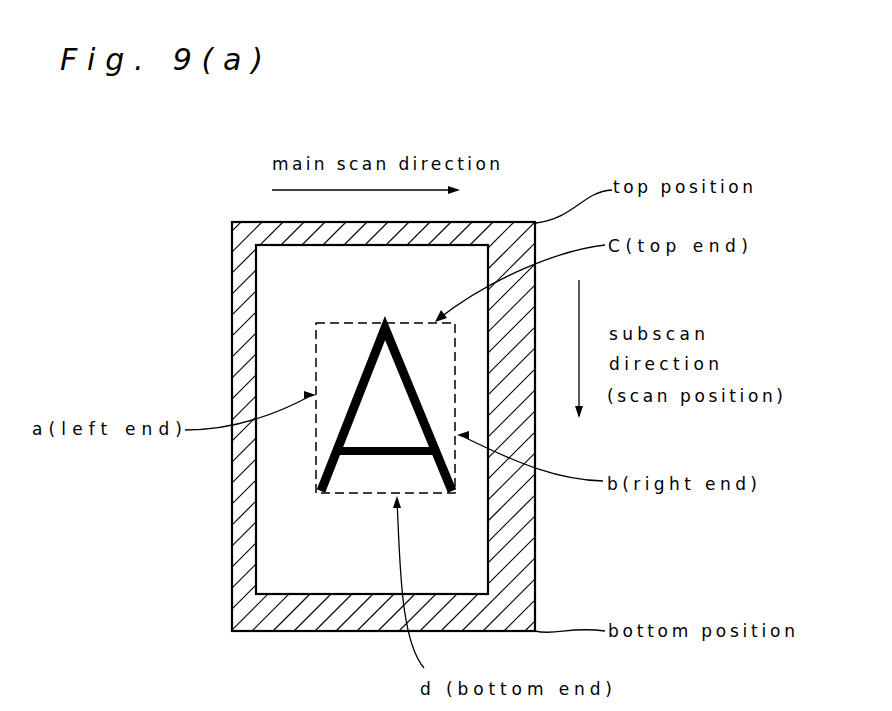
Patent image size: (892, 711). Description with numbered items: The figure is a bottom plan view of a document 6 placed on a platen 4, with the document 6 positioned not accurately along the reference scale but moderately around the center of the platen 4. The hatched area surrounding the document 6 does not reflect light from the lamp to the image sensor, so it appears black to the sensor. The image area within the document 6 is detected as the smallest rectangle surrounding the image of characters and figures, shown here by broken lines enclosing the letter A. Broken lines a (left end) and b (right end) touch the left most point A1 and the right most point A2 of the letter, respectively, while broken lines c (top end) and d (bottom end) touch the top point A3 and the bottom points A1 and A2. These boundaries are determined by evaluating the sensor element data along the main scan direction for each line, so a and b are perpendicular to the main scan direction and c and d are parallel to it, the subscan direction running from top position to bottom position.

The platen 4 is at (513, 232).
The document 6 is at (300, 283).
The left most point of the image A1 is at (317, 494).
The right most point of the image A2 is at (456, 494).
The top point of the image A3 is at (385, 324).